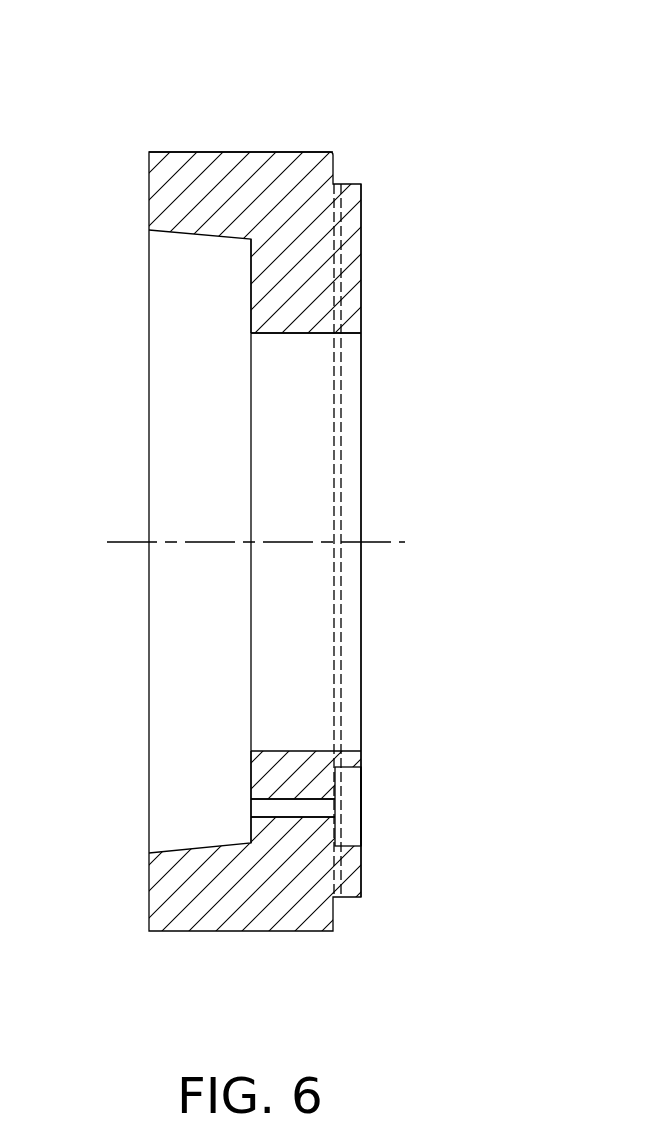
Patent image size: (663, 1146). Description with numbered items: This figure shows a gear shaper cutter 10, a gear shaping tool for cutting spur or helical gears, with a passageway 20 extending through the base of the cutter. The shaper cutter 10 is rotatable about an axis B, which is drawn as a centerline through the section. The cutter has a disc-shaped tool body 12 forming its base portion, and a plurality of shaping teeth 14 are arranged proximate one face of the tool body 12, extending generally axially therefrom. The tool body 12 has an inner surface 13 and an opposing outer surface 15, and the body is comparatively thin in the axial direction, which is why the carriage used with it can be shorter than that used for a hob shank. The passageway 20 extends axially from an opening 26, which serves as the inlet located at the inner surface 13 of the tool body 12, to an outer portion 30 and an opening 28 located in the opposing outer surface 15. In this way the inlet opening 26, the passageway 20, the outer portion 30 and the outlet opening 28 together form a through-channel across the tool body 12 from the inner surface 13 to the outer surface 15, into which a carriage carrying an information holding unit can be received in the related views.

The shaper cutter 10 is at (283, 140).
The tool body 12 is at (273, 283).
The inner surface 13 is at (253, 334).
The shaping teeth 14 is at (180, 173).
The outer surface 15 is at (362, 262).
The passageway 20 is at (298, 808).
The opening 26 is at (250, 809).
The opening 28 is at (362, 818).
The outer portion 30 is at (347, 779).
The axis B is at (389, 540).